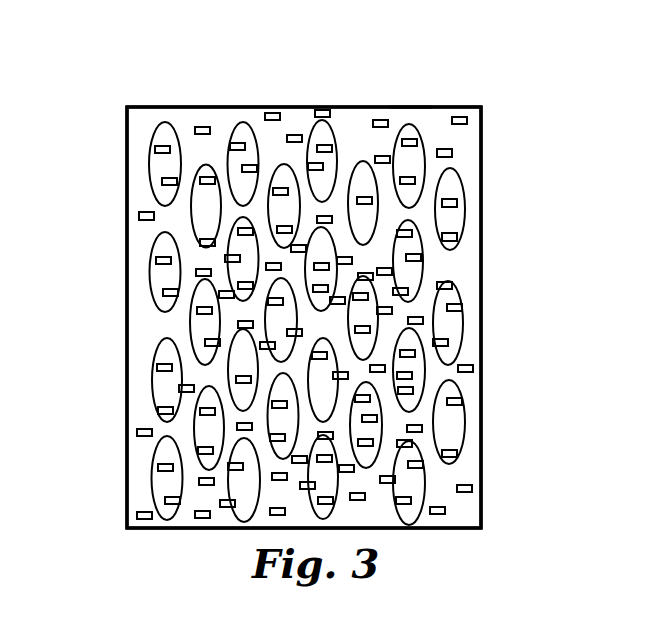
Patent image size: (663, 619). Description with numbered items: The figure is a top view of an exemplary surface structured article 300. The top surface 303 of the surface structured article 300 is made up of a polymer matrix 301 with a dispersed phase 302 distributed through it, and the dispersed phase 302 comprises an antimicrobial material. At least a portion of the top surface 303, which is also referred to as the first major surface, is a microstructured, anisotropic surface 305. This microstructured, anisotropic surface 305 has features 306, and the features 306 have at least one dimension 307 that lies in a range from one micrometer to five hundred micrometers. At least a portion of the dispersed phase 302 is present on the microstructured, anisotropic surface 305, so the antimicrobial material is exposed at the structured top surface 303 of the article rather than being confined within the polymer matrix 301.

The surface structured article 300 is at (547, 59).
The polymer matrix 301 is at (148, 318).
The dispersed phase 302 is at (138, 215).
The top surface 303 is at (270, 84).
The microstructured, anisotropic surface 305 is at (151, 380).
The features 306 is at (430, 107).
The dimension 307 is at (493, 172).